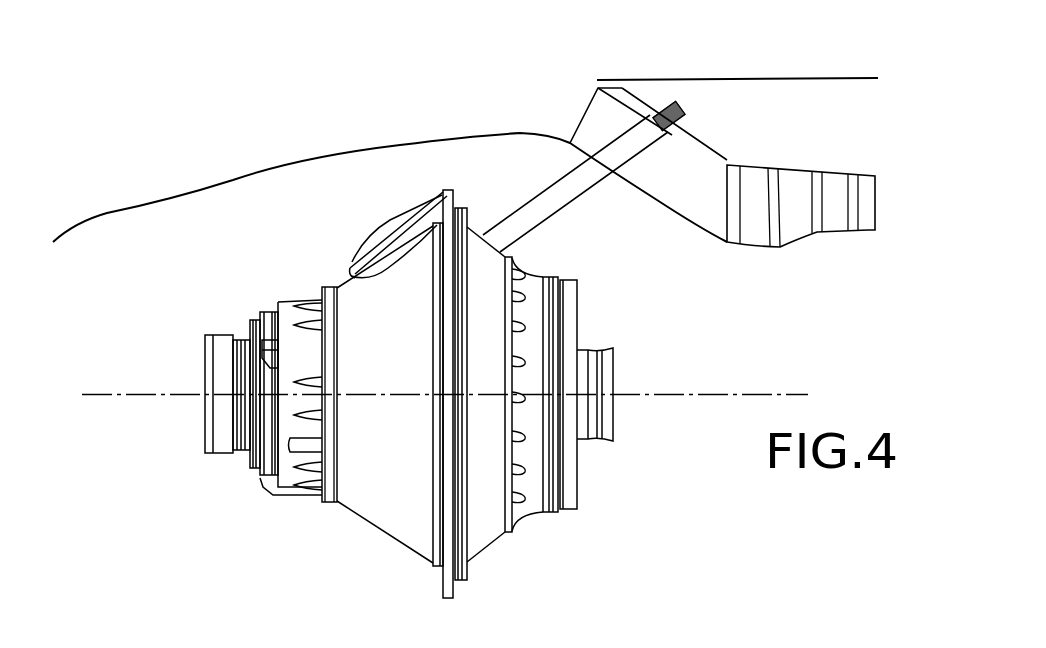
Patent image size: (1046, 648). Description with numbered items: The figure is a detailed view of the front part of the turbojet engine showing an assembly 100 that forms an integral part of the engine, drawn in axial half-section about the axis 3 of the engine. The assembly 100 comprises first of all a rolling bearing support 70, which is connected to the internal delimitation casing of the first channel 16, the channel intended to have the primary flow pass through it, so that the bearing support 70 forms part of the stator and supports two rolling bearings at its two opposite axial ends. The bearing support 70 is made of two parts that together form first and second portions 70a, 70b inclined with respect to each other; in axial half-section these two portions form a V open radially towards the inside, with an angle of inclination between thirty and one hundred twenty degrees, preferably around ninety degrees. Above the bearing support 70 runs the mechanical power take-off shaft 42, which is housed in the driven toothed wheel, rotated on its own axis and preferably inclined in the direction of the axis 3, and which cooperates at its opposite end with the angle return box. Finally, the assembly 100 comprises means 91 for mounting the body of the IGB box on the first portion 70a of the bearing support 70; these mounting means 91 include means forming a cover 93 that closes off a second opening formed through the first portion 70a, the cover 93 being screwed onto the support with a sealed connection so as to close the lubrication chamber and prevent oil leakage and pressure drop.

The axis 3 is at (127, 395).
The first channel 16 is at (700, 192).
The mechanical power take-off shaft 42 is at (633, 138).
The rolling bearing support 70 is at (390, 503).
The first portion of the bearing support 70a is at (365, 290).
The second portion of the bearing support 70b is at (498, 252).
The mounting means 91 is at (402, 214).
The cover 93 is at (383, 233).
The assembly 100 is at (213, 230).